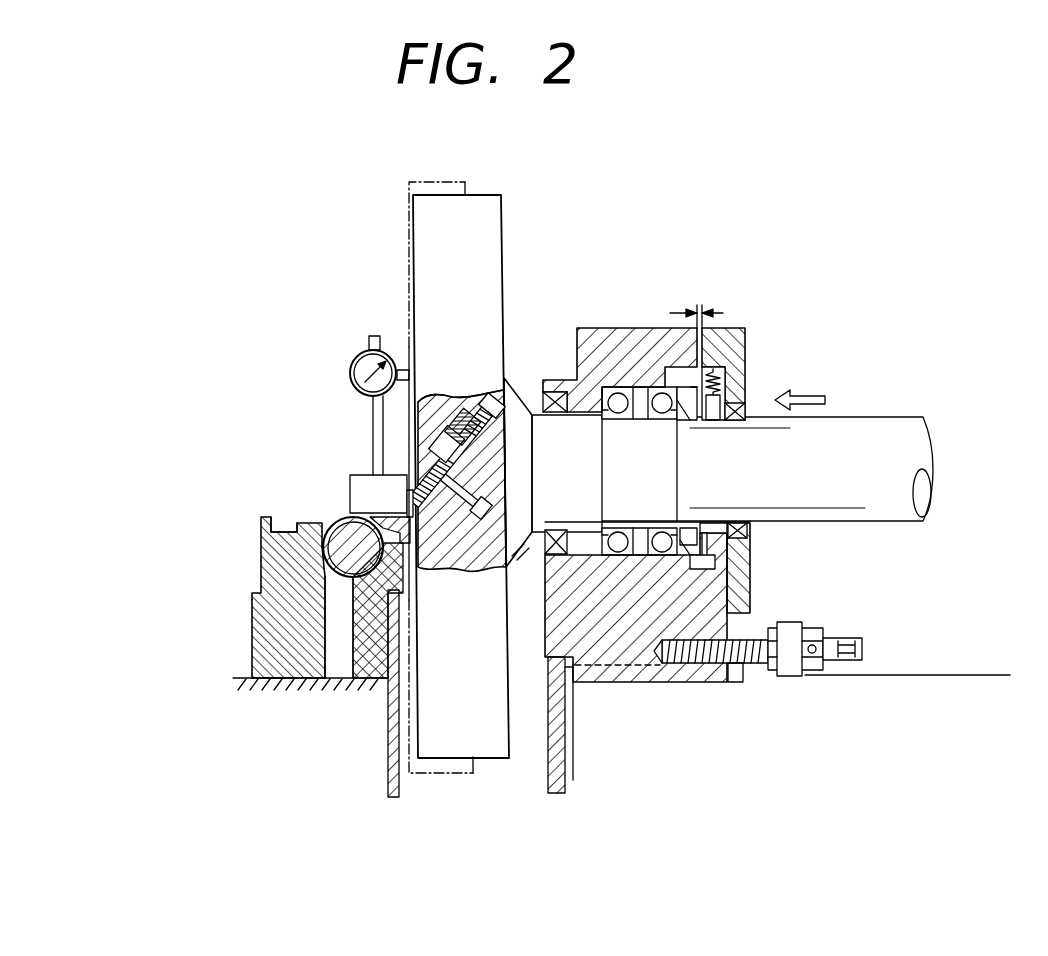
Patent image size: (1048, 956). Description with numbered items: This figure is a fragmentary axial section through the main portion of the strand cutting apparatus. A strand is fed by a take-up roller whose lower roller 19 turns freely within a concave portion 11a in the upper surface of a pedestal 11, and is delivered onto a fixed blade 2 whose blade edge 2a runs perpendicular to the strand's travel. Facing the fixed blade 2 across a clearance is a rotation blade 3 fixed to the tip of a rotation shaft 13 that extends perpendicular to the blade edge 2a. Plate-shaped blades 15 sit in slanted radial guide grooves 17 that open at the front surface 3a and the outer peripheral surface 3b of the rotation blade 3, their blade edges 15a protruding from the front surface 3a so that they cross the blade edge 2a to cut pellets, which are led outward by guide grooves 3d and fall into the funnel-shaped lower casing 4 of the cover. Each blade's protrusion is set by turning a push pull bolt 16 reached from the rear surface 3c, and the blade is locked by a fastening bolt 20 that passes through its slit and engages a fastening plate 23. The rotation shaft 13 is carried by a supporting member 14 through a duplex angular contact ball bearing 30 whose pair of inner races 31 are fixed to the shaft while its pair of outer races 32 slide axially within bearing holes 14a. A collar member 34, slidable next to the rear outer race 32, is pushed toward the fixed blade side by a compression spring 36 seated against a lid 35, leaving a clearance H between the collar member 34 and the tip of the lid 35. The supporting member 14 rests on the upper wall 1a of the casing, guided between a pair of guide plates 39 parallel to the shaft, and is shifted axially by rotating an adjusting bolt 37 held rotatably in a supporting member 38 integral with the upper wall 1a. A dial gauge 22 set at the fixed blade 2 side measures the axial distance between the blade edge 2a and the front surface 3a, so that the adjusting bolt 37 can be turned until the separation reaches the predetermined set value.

The upper wall 1a is at (895, 668).
The fixed blade 2 is at (358, 528).
The blade edge 2a is at (335, 590).
The rotation blade 3 is at (488, 228).
The front surface 3a is at (393, 608).
The outer peripheral surface 3b is at (477, 772).
The rear surface 3c is at (505, 292).
The guide grooves 3d is at (366, 565).
The lower casing 4 is at (392, 737).
The pedestal 11 is at (252, 612).
The concave portion 11a is at (337, 548).
The rotation shaft 13 is at (905, 484).
The supporting member 14 is at (643, 643).
The bearing holes 14a is at (617, 553).
The plate-shaped blades 15 is at (372, 193).
The blade edges 15a is at (398, 522).
The push pull bolt 16 is at (497, 393).
The guide grooves for the plate-shaped blades 17 is at (430, 460).
The lower roller 19 is at (262, 553).
The fastening bolt 20 is at (487, 518).
The dial gauge 22 is at (365, 363).
The fastening plate 23 is at (447, 397).
The duplex angular contact ball bearing 30 is at (618, 383).
The inner races 31 is at (697, 515).
The outer races 32 is at (612, 380).
The collar member 34 is at (693, 424).
The lid 35 is at (748, 332).
The compression spring 36 is at (728, 372).
The adjusting bolt 37 is at (858, 642).
The supporting member 38 is at (787, 673).
The guide plates 39 is at (731, 683).
The clearance H is at (700, 305).